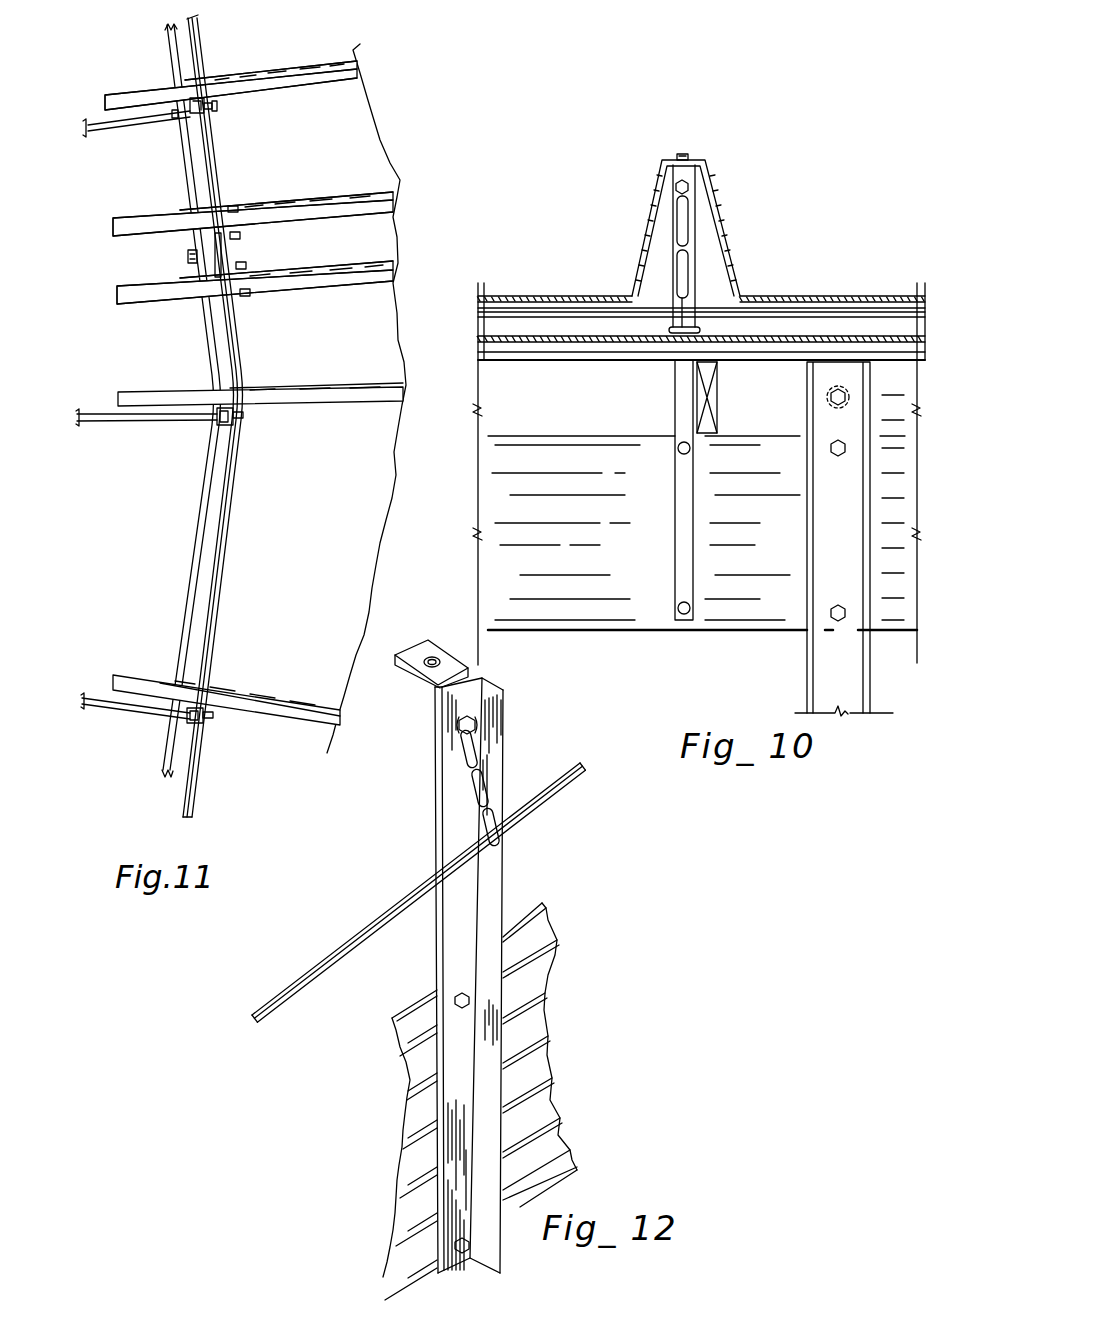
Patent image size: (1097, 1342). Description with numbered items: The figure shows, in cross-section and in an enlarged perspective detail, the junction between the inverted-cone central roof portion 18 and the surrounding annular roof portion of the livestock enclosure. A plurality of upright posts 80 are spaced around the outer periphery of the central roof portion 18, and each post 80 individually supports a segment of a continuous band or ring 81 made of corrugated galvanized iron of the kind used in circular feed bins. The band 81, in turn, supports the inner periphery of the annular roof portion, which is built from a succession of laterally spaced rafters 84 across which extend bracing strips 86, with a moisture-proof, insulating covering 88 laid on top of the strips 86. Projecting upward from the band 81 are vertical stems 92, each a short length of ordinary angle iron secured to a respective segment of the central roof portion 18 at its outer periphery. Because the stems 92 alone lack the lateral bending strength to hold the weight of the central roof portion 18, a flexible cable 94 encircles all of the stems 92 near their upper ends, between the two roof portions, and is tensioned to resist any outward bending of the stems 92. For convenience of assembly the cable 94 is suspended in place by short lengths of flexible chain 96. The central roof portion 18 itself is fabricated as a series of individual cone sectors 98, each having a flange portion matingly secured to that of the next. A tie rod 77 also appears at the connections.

In FIG. 10, the first central roof portion 18 is at (661, 176).
In FIG. 11, the tie rod 77 is at (166, 118).
In FIG. 11, the upright posts 80 is at (245, 228).
In FIG. 10, the upright posts 80 is at (806, 566).
In FIG. 11, the continuous band or ring 81 is at (163, 44).
In FIG. 10, the continuous band or ring 81 is at (704, 634).
In FIG. 12, the continuous band or ring 81 is at (545, 935).
In FIG. 11, the rafters 84 is at (332, 76).
In FIG. 10, the rafters 84 is at (716, 404).
In FIG. 10, the bracing strips 86 is at (644, 353).
In FIG. 10, the covering 88 is at (796, 330).
In FIG. 11, the vertical stems 92 is at (200, 150).
In FIG. 10, the vertical stems 92 is at (700, 262).
In FIG. 12, the vertical stems 92 is at (502, 878).
In FIG. 11, the flexible cable 94 is at (210, 46).
In FIG. 10, the flexible cable 94 is at (588, 318).
In FIG. 12, the flexible cable 94 is at (377, 916).
In FIG. 11, the flexible chain 96 is at (217, 106).
In FIG. 10, the flexible chain 96 is at (680, 238).
In FIG. 12, the flexible chain 96 is at (487, 803).
In FIG. 10, the cone sectors 98 is at (725, 218).